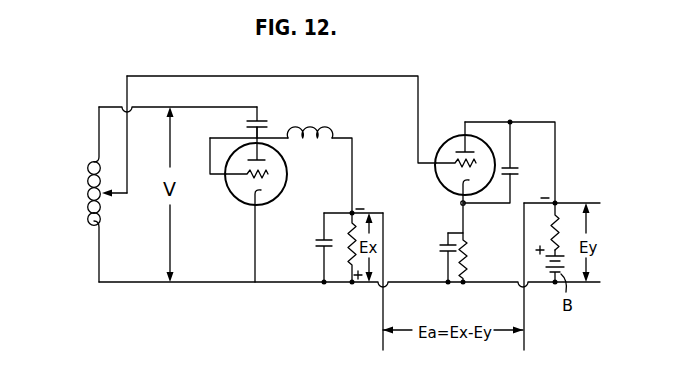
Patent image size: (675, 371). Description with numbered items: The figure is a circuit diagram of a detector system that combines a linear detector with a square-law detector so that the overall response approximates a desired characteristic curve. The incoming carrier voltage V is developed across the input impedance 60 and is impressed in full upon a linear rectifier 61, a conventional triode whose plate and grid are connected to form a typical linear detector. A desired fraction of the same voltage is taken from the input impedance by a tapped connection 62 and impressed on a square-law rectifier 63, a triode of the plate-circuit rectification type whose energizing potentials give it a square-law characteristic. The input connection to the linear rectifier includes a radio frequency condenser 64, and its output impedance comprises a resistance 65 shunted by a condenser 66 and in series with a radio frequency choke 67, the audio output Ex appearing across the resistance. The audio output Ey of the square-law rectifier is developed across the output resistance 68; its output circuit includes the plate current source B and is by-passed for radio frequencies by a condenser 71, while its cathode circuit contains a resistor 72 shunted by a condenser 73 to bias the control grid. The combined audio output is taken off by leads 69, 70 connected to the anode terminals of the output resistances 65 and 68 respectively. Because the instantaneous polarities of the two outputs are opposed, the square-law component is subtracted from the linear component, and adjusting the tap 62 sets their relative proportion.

The input impedance 60 is at (89, 196).
The linear rectifier 61 is at (235, 198).
The tapped connection 62 is at (116, 196).
The square-law rectifier 63 is at (451, 138).
The radio frequency condenser 64 is at (262, 121).
The resistance 65 is at (348, 265).
The condenser 66 is at (318, 240).
The radio frequency choke 67 is at (305, 133).
The output resistance 68 is at (557, 213).
The lead 69 is at (385, 303).
The lead 70 is at (521, 303).
The condenser 71 is at (514, 168).
The resistor 72 is at (470, 257).
The condenser 73 is at (440, 246).